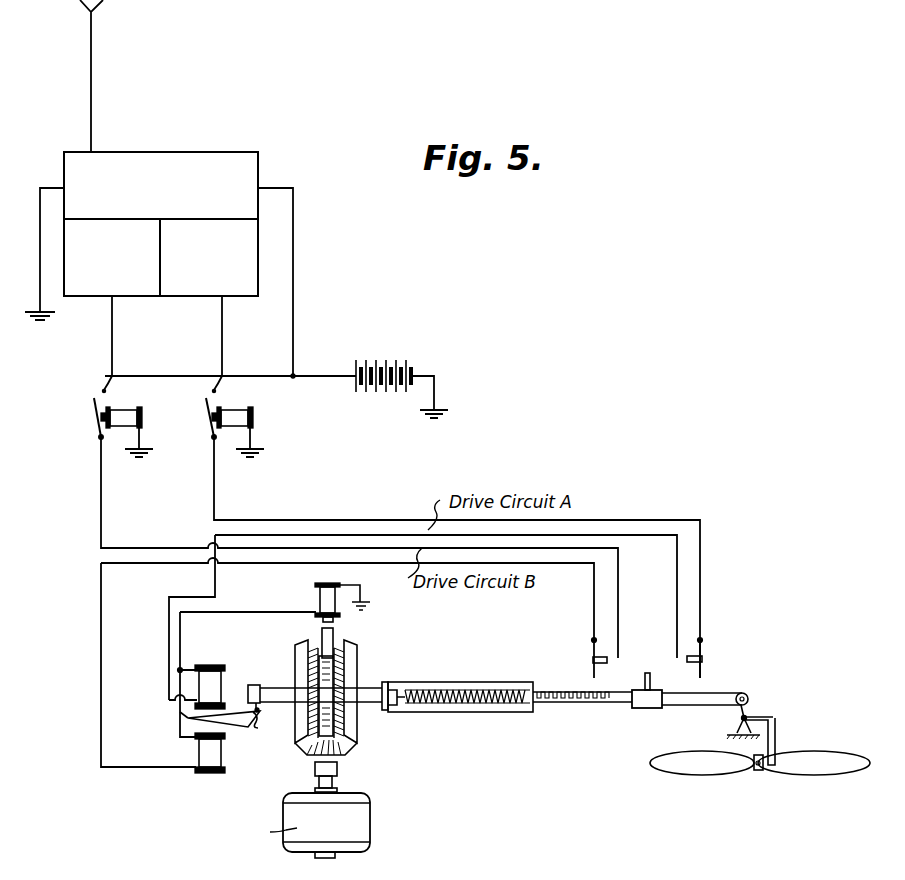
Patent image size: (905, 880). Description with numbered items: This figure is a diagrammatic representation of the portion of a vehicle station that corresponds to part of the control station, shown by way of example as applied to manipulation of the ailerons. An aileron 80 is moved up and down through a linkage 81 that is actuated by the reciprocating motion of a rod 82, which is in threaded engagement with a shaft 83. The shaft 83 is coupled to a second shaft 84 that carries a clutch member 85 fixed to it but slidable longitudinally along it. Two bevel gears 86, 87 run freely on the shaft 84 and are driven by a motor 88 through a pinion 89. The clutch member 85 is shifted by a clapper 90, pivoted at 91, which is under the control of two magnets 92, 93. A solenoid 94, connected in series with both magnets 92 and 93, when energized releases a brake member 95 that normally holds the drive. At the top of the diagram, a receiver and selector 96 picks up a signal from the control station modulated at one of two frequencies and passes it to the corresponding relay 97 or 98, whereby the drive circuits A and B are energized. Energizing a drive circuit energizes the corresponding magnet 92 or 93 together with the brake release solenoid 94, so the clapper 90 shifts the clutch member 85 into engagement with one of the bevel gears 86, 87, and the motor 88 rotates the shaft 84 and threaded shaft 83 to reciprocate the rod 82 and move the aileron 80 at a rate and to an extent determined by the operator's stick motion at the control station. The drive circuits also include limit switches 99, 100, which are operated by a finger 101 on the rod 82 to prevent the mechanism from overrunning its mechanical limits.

The aileron 80 is at (822, 757).
The linkage 81 is at (775, 719).
The rod 82 is at (718, 706).
The shaft 83 is at (486, 714).
The shaft 84 is at (372, 686).
The clutch member 85 is at (335, 732).
The bevel gear 86 is at (346, 657).
The bevel gear 87 is at (296, 652).
The motor 88 is at (363, 821).
The pinion 89 is at (345, 758).
The clapper 90 is at (247, 727).
The pivot 91 is at (258, 724).
The magnet 92 is at (216, 665).
The magnet 93 is at (208, 773).
The solenoid 94 is at (315, 596).
The brake member 95 is at (334, 633).
The receiver and selector 96 is at (260, 167).
The relay 97 is at (253, 420).
The relay 98 is at (142, 420).
The limit switch 99 is at (703, 660).
The limit switch 100 is at (593, 661).
The finger 101 is at (651, 680).